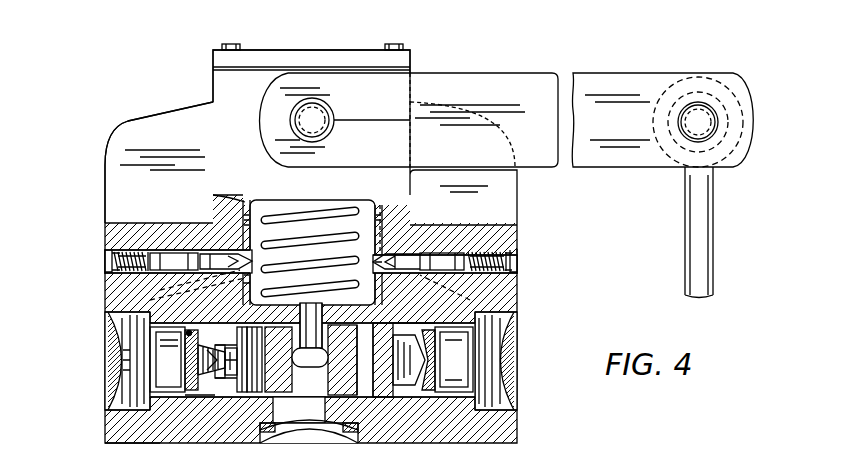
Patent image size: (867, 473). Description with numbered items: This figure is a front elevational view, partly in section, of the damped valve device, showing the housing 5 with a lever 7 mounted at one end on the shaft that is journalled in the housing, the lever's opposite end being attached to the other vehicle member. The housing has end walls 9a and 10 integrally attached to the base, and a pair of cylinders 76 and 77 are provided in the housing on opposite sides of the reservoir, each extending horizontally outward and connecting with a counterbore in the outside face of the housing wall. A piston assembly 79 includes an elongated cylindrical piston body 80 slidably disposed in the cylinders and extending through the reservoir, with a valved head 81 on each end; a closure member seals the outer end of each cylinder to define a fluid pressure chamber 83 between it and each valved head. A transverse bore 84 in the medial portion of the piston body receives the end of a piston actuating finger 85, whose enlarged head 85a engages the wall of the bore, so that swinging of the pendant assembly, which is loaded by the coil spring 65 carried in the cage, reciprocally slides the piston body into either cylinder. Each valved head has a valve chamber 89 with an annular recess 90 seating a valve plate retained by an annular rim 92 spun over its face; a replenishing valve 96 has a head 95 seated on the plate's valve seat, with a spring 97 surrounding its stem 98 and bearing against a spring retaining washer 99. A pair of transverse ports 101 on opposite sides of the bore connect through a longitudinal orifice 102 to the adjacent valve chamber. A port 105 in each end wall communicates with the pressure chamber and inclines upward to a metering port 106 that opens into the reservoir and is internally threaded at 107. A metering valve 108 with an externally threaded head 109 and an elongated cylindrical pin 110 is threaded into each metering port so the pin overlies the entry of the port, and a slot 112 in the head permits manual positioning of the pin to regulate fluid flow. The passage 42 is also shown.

The housing 5 is at (104, 152).
The lever 7 is at (515, 78).
The end wall 9a is at (105, 236).
The end wall 10 is at (512, 228).
The passage 42 is at (245, 283).
The coil spring 65 is at (352, 205).
The cylinder 76 is at (228, 398).
The cylinder 77 is at (428, 395).
The piston assembly 79 is at (385, 400).
The piston body 80 is at (268, 400).
The valved head 81 is at (395, 330).
The fluid pressure chamber 83 is at (105, 428).
The bore 84 is at (300, 440).
The piston actuating finger 85 is at (302, 313).
The enlarged head 85a is at (312, 367).
The valve chamber 89 is at (210, 395).
The annular recess 90 is at (160, 395).
The annular rim 92 is at (120, 443).
The head 95 is at (190, 355).
The replenishing valve 96 is at (188, 368).
The spring 97 is at (210, 340).
The stem 98 is at (228, 343).
The spring retaining washer 99 is at (225, 370).
The transversely extending port 101 is at (255, 318).
The orifice 102 is at (250, 350).
The port 105 is at (150, 300).
The metering port 106 is at (228, 254).
The internal thread 107 is at (110, 272).
The metering valve 108 is at (105, 258).
The externally threaded head 109 is at (122, 248).
The cylindrical pin 110 is at (170, 252).
The slot 112 is at (108, 262).